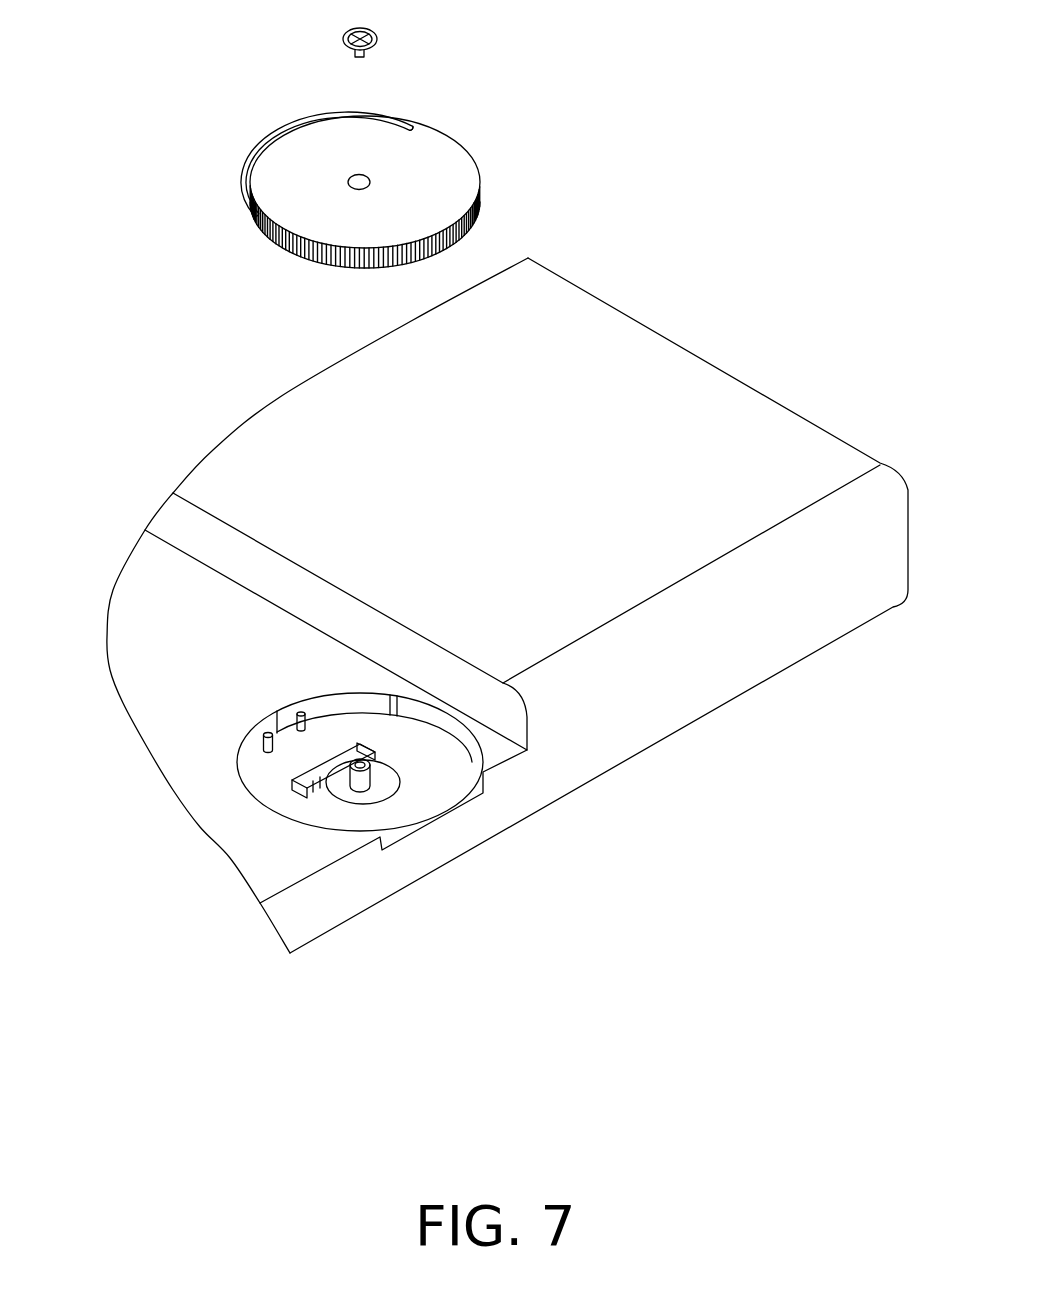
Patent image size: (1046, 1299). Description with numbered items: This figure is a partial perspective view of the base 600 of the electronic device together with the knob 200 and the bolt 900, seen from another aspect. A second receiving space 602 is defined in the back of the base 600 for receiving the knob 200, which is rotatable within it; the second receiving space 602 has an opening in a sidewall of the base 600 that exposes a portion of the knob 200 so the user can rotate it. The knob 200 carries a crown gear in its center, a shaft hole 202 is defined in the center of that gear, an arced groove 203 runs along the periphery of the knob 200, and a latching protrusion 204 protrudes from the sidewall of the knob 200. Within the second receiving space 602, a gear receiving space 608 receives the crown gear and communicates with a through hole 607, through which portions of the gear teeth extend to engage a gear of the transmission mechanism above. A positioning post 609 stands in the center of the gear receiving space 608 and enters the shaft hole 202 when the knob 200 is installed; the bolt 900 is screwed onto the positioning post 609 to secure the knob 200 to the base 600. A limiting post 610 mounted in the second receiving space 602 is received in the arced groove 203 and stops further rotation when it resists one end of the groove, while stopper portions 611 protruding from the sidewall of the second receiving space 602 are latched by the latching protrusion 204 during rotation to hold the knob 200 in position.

The knob 200 is at (488, 163).
The shaft hole 202 is at (348, 181).
The arced groove 203 is at (408, 127).
The latching protrusion 204 is at (278, 134).
The base 600 is at (717, 670).
The second receiving space 602 is at (272, 790).
The through hole 607 is at (327, 778).
The gear receiving space 608 is at (376, 793).
The positioning post 609 is at (490, 772).
The limiting post 610 is at (298, 712).
The stopper portions 611 is at (440, 716).
The bolt 900 is at (377, 34).